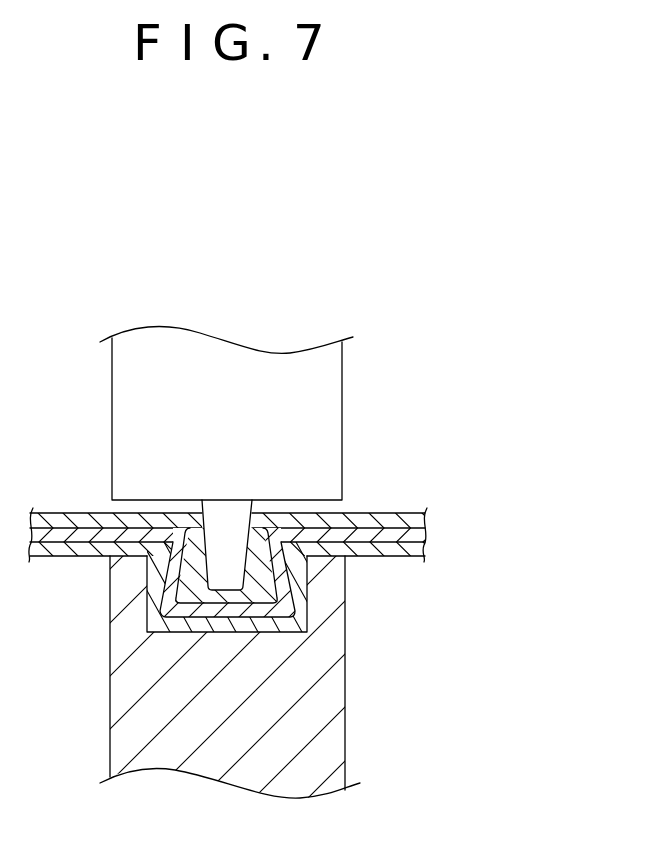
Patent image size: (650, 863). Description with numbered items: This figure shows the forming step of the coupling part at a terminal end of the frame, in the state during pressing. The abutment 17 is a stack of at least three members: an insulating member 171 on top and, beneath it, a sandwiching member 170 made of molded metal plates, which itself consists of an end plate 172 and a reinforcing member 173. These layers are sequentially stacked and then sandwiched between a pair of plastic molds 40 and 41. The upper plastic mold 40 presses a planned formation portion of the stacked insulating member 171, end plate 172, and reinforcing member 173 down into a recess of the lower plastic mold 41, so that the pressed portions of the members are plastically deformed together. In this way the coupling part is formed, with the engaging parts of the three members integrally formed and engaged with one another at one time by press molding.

The abutment 17 is at (339, 325).
The sandwiching member 170 is at (585, 462).
The insulating member 171 is at (427, 522).
The end plate 172 is at (418, 532).
The reinforcing member 173 is at (428, 553).
The plastic mold 40 is at (112, 418).
The plastic mold 41 is at (109, 672).